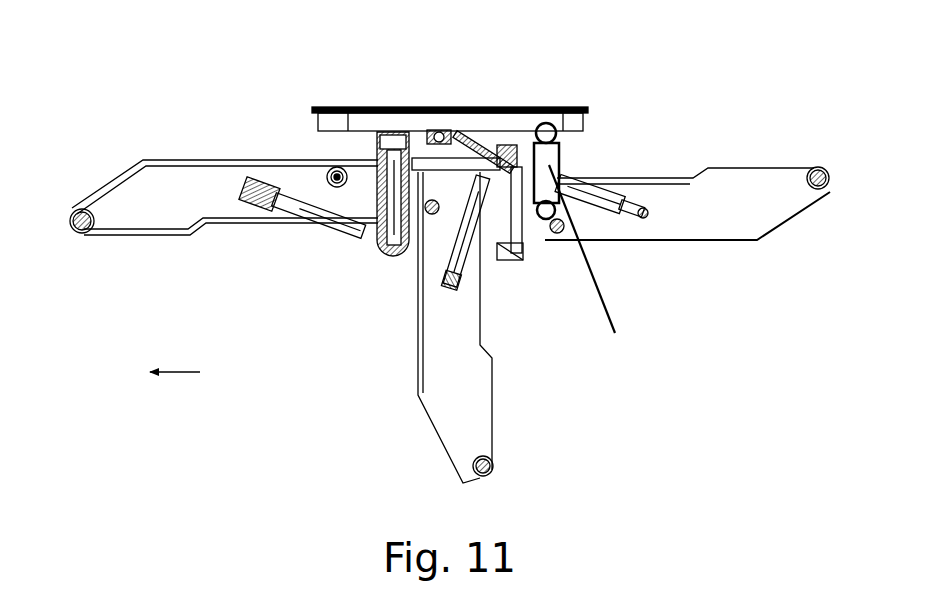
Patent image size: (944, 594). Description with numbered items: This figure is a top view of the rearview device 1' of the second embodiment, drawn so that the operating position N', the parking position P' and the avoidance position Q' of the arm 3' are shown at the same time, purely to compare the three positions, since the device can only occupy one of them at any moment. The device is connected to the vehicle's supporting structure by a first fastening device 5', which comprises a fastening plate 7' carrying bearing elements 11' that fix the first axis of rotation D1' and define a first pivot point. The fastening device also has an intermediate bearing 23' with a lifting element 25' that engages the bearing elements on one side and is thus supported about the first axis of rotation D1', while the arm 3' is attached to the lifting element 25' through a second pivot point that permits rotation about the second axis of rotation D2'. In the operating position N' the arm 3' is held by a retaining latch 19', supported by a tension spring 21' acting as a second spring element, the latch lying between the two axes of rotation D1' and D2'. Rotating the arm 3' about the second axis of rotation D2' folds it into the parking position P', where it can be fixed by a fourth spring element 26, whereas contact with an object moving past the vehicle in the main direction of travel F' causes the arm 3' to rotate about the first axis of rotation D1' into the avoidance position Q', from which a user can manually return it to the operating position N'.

The rearview device 1' is at (446, 242).
The first fastening device 5' is at (434, 71).
The arm 3' is at (446, 295).
The avoidance position Q' is at (220, 171).
The parking position P' is at (687, 219).
The operating position N' is at (433, 327).
The tension spring 21' is at (443, 260).
The second axis of rotation D2' is at (466, 182).
The lifting element 25' is at (422, 182).
The bearing elements 11' is at (402, 99).
The fastening plate 7' is at (557, 96).
The retaining latch 19' is at (456, 110).
The intermediate bearing 23' is at (499, 180).
The first axis of rotation D1' is at (320, 131).
The fourth spring element 26 is at (600, 265).
The main direction of travel F' is at (175, 356).